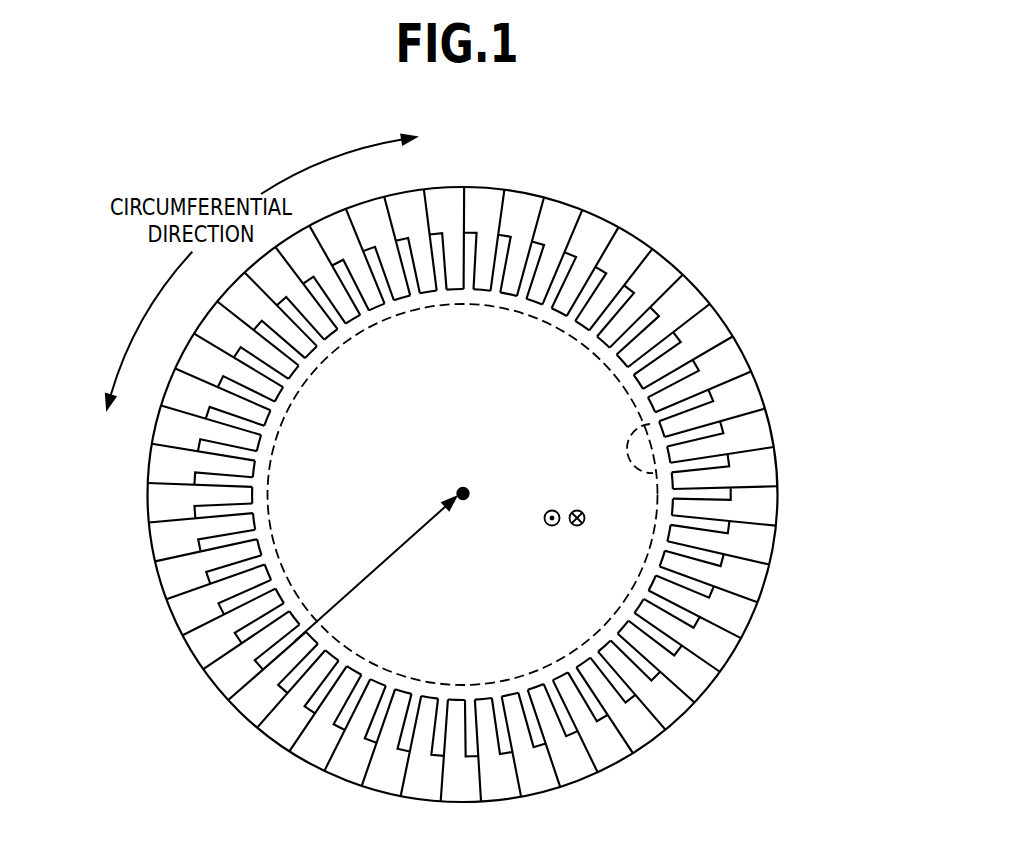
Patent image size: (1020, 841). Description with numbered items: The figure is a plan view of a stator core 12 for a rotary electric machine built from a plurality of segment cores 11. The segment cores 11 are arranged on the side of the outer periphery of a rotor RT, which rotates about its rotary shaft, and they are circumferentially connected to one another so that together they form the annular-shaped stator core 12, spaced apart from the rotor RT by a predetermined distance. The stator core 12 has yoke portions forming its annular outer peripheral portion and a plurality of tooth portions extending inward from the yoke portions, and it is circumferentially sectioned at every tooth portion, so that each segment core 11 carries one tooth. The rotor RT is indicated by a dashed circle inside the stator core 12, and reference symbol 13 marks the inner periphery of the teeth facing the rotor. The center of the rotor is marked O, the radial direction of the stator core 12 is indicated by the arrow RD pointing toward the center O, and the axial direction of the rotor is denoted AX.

The segment core 11 is at (663, 271).
The stator core 12 is at (552, 184).
The inner peripheral surface 13 is at (524, 293).
The rotor RT is at (650, 424).
The radial direction of the stator core RD is at (397, 551).
The axial direction of the rotor AX is at (544, 518).
The center of the rotor O is at (475, 485).